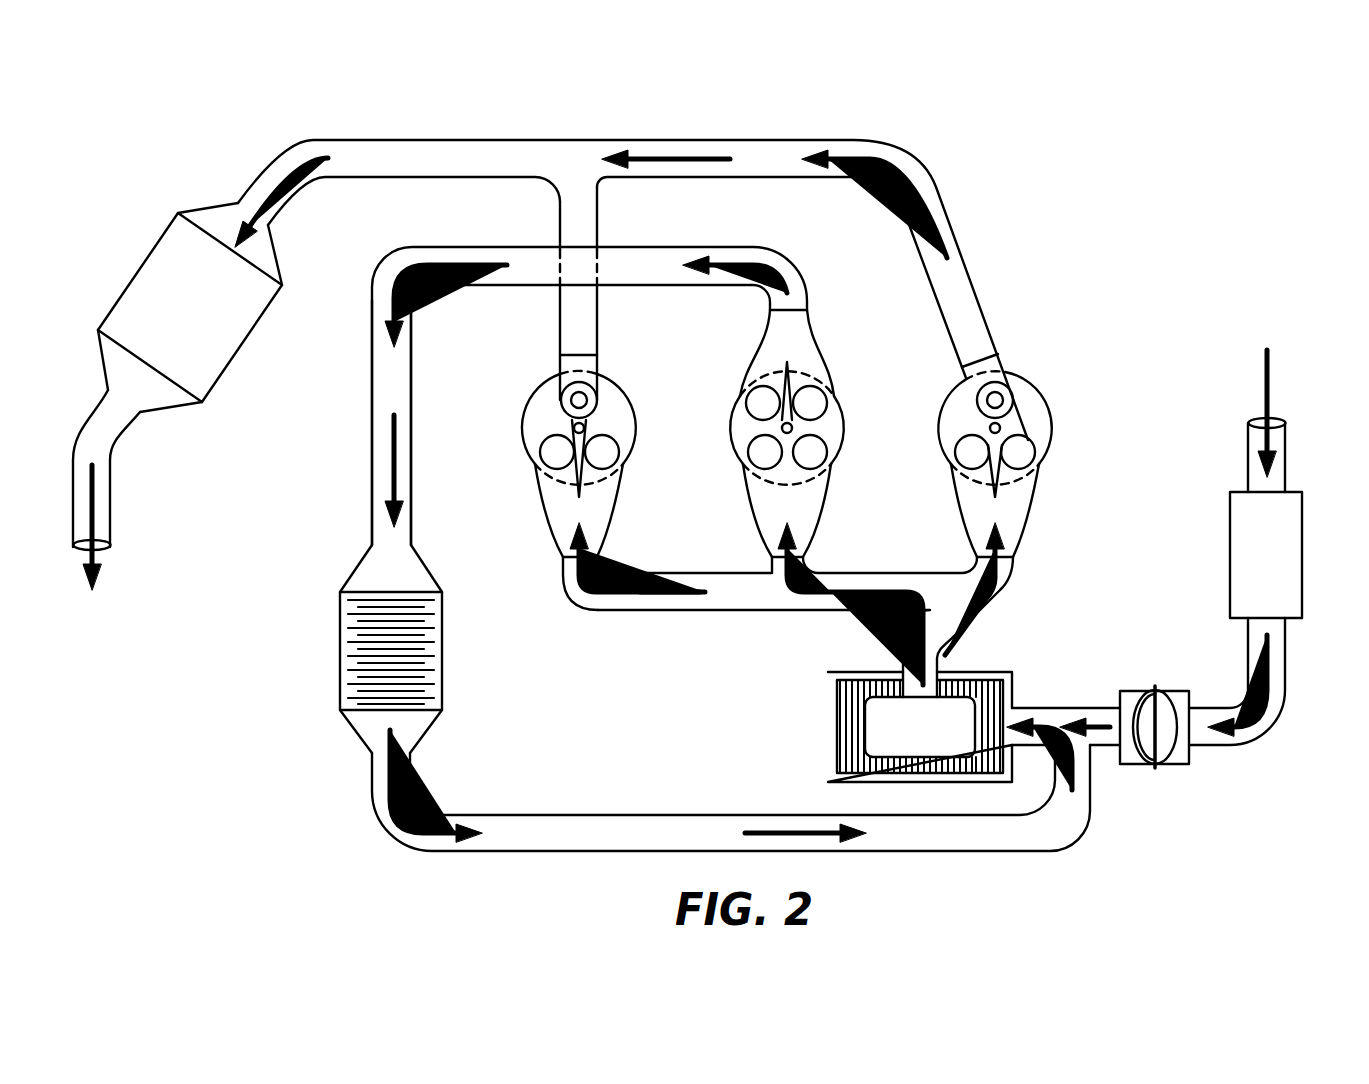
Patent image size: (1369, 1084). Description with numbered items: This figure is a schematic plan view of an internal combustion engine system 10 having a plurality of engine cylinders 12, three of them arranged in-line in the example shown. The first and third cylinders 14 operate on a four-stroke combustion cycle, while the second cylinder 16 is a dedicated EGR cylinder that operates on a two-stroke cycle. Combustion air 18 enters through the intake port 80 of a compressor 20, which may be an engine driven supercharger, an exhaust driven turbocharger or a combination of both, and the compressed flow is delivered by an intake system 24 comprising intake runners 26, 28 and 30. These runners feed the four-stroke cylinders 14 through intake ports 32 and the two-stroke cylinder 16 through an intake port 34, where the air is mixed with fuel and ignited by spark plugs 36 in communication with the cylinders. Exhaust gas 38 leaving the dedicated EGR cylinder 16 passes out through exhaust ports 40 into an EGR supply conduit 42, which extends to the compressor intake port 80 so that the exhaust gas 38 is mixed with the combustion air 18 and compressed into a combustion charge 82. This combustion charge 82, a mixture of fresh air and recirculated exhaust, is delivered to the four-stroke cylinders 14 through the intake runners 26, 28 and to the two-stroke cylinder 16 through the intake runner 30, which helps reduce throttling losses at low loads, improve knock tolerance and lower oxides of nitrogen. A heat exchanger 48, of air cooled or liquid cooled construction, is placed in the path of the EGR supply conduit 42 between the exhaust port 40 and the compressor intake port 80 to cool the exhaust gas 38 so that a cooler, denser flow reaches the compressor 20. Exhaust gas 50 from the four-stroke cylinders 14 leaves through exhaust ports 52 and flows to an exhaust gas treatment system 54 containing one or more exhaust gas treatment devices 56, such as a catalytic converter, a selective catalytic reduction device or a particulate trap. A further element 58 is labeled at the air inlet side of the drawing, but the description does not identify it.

The internal combustion engine system 10 is at (290, 758).
The engine cylinders 12 is at (636, 386).
The first and third cylinders 14 is at (623, 427).
The second cylinder 16 is at (737, 437).
The combustion air 18 is at (1097, 727).
The compressor 20 is at (812, 730).
The intake system 24 is at (740, 628).
The intake runner 26 is at (607, 600).
The intake runner 28 is at (1027, 540).
The intake runner 30 is at (802, 568).
The intake ports 32 is at (567, 515).
The intake port 34 is at (810, 508).
The spark plugs 36 is at (574, 428).
The exhaust gas 38 is at (370, 465).
The exhaust ports 40 is at (800, 332).
The EGR supply conduit 42 is at (433, 246).
The heat exchanger 48 is at (325, 665).
The exhaust gas 50 is at (675, 157).
The exhaust ports 52 is at (590, 368).
The exhaust gas treatment system 54 is at (118, 241).
The exhaust gas treatment devices 56 is at (204, 319).
The air intake 58 is at (1267, 382).
The intake port of the compressor 80 is at (1048, 706).
The combustion charge 82 is at (657, 597).